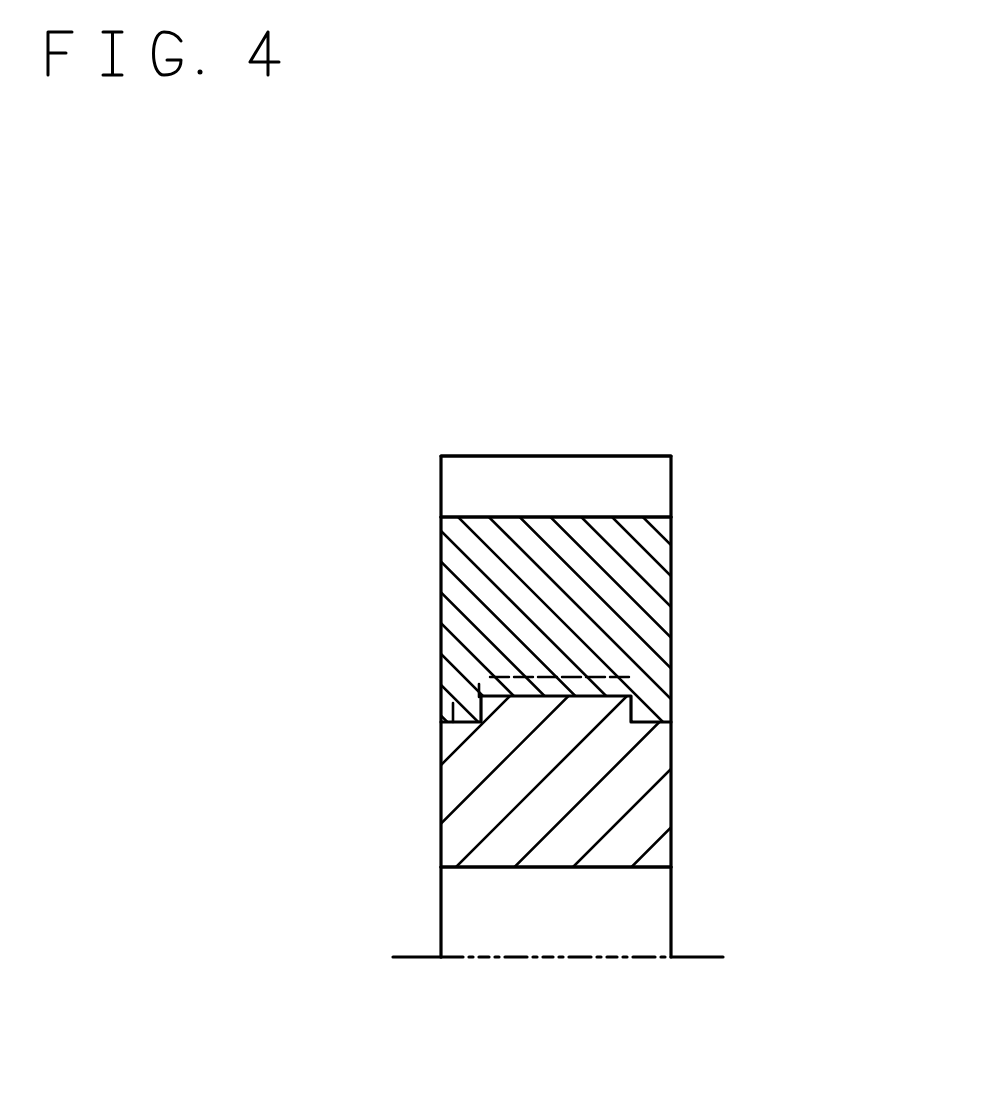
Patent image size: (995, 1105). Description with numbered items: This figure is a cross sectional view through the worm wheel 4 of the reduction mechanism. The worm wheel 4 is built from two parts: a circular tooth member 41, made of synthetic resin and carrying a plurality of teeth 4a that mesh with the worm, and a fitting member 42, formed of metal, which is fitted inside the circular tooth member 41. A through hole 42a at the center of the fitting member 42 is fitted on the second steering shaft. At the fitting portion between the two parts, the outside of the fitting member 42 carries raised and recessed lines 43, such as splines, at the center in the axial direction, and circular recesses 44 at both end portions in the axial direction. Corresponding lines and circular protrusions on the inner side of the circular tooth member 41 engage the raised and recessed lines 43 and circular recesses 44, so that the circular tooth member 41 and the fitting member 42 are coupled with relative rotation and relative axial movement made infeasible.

The worm wheel 4 is at (703, 456).
The teeth 4a is at (528, 460).
The circular tooth member 41 is at (655, 573).
The fitting member 42 is at (657, 807).
The through hole 42a is at (638, 867).
The raised and recessed lines 43 is at (598, 696).
The circular recesses 44 is at (308, 654).